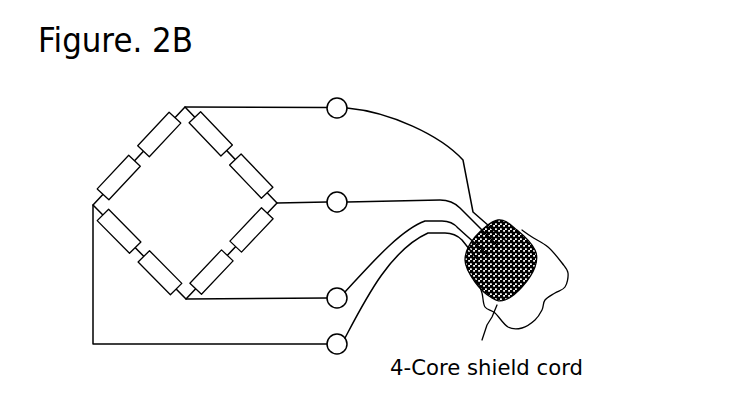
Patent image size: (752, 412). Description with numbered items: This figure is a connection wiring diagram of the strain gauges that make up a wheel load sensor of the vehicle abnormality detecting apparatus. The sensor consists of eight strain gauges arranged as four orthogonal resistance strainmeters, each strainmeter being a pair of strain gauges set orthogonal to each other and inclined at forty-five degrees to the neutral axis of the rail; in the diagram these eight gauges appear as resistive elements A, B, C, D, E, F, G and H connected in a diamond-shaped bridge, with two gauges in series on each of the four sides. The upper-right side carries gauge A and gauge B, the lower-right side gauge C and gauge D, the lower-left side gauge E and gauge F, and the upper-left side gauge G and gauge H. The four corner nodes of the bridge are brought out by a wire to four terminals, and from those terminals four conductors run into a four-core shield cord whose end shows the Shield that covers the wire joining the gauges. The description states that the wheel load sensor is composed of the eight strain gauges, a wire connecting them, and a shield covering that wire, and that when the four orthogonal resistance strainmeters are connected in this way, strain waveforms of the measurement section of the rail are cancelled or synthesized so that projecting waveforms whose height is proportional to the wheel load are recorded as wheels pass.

The bridge resistor A is at (216, 134).
The bridge resistor B is at (252, 175).
The bridge resistor C is at (253, 234).
The bridge resistor D is at (216, 273).
The bridge resistor E is at (157, 275).
The bridge resistor F is at (119, 238).
The bridge resistor G is at (118, 173).
The bridge resistor H is at (154, 132).
The shield Shield is at (515, 225).